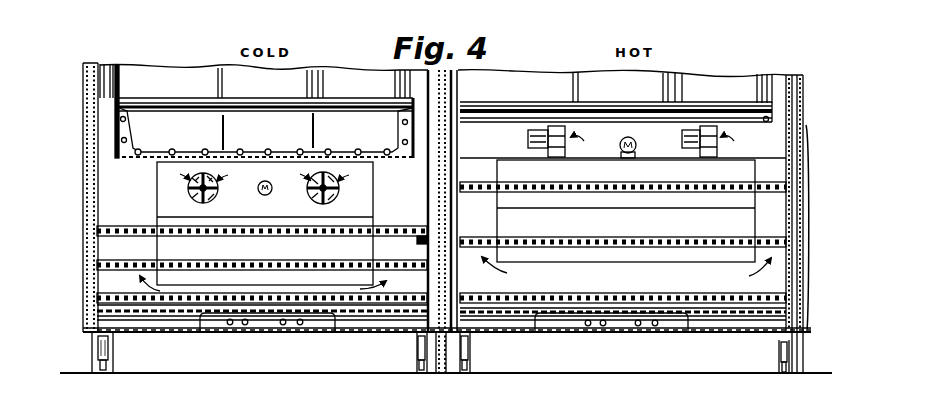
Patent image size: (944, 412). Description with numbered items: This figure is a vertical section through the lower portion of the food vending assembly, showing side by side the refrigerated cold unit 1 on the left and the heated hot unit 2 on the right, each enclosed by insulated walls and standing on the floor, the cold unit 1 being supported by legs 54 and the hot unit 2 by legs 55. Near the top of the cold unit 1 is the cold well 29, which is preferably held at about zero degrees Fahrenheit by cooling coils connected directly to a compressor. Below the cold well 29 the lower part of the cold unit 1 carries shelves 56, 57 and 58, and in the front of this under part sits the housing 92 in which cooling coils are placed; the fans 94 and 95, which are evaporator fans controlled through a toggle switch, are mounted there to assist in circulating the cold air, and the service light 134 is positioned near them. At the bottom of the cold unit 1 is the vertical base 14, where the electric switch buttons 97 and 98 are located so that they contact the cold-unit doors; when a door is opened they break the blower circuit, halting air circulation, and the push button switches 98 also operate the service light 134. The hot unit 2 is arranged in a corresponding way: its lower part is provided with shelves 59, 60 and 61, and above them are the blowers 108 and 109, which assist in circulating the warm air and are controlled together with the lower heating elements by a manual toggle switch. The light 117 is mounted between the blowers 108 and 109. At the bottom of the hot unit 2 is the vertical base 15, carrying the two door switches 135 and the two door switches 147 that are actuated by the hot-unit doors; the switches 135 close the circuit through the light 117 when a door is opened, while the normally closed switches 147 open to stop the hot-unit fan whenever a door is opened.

The cold unit 1 is at (81, 207).
The hot unit 2 is at (805, 107).
The vertical base 14 is at (264, 360).
The vertical base 15 is at (620, 361).
The cold well 29 is at (270, 136).
The legs 54 is at (113, 347).
The legs 55 is at (469, 360).
The shelf 56 is at (381, 227).
The shelf 57 is at (380, 262).
The shelf 58 is at (387, 296).
The shelf 59 is at (760, 181).
The shelf 60 is at (746, 236).
The shelf 61 is at (733, 298).
The housing 92 is at (377, 193).
The fan 94 is at (226, 188).
The fan 95 is at (337, 190).
The electric switch button 97 is at (603, 327).
The electric switch button 98 is at (588, 327).
The blower 108 is at (527, 137).
The blower 109 is at (682, 142).
The light 117 is at (636, 140).
The service light 134 is at (268, 194).
The door switch 135 is at (245, 326).
The door switch 147 is at (228, 326).